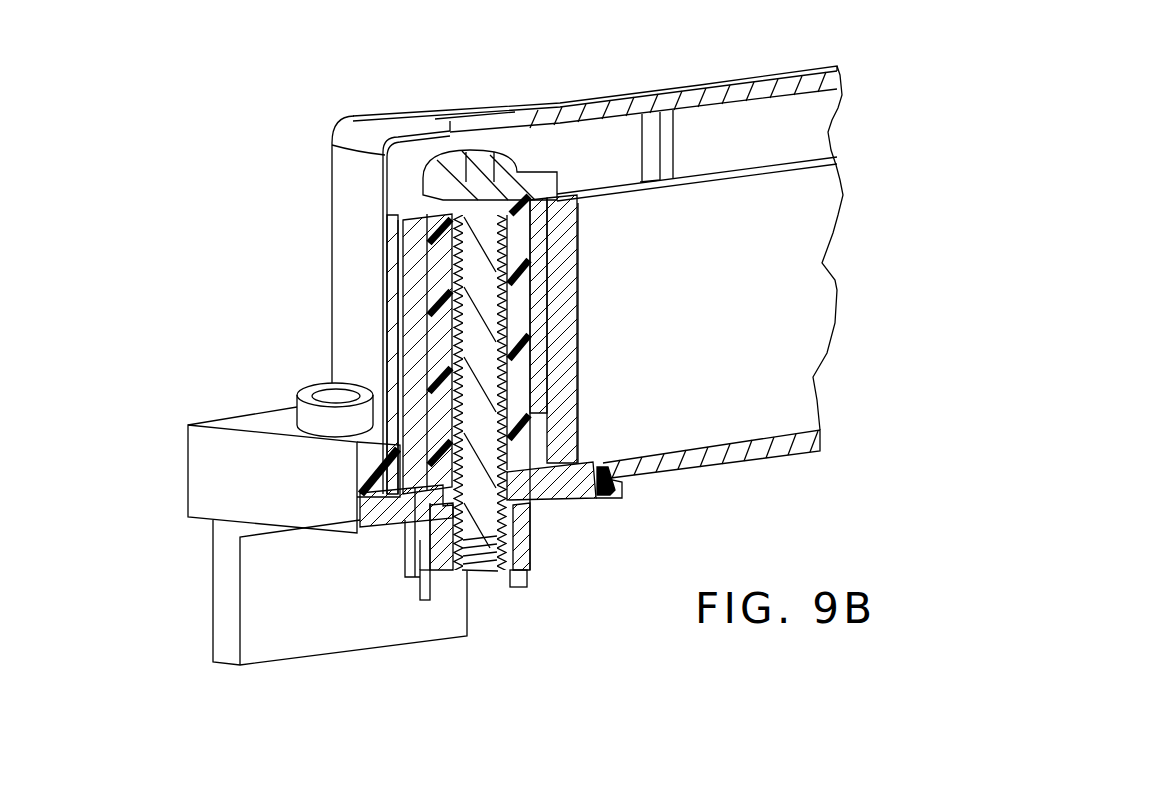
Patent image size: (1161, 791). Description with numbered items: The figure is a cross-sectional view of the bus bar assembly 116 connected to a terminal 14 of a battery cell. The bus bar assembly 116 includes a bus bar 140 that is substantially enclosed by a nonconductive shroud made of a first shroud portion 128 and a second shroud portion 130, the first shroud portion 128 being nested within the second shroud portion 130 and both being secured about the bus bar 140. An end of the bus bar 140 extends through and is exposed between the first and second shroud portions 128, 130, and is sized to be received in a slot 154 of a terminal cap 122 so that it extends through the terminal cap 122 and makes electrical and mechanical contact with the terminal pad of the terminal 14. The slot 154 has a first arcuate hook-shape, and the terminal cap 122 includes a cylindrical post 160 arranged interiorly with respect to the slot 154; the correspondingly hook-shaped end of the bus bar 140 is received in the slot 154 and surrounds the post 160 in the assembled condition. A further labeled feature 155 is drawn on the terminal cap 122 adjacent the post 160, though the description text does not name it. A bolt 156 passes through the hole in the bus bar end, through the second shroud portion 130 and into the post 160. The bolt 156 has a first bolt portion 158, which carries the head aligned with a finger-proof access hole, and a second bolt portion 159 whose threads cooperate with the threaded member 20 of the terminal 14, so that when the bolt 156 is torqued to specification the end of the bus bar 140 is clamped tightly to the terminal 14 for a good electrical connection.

The terminal 14 is at (197, 624).
The threaded member 20 is at (523, 568).
The bus bar assembly 116 is at (838, 64).
The terminal cap 122 is at (205, 474).
The first shroud portion 128 is at (727, 97).
The second shroud portion 130 is at (803, 455).
The bus bar 140 is at (783, 295).
The slot 154 is at (406, 578).
The cylindrical boss 155 is at (317, 393).
The bolt 156 is at (472, 358).
The first bolt portion 158 is at (410, 198).
The second bolt portion 159 is at (533, 500).
The cylindrical post 160 is at (437, 285).